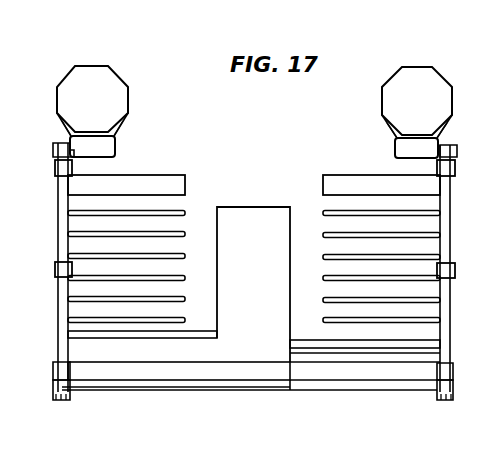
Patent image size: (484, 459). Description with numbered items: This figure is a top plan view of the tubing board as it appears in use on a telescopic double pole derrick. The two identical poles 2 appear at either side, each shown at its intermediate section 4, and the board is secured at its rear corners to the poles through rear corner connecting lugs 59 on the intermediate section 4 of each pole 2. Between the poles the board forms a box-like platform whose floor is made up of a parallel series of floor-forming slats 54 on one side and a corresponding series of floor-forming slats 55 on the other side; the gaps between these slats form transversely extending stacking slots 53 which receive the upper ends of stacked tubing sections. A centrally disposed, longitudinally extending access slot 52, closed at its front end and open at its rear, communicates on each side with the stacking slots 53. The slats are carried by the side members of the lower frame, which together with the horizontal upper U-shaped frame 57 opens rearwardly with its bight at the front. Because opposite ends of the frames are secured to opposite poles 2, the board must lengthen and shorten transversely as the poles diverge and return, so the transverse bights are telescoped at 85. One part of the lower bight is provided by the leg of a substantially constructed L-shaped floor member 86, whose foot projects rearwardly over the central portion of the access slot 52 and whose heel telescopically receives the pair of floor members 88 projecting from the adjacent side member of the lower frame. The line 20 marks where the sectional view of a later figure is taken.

The pole 2 is at (356, 96).
The intermediate section 4 is at (419, 113).
The line 20— 20 is at (202, 180).
The access slot 52 is at (254, 243).
The stacking slots 53 is at (155, 225).
The floor-forming slats 54 is at (157, 279).
The floor-forming slats 55 is at (335, 278).
The upper U-shaped frame 57 is at (205, 396).
The rear corner connecting lugs 59 is at (104, 145).
The telescoped bight portion 85 is at (290, 362).
The L-shaped floor member 86 is at (253, 336).
The floor members 88 is at (363, 358).